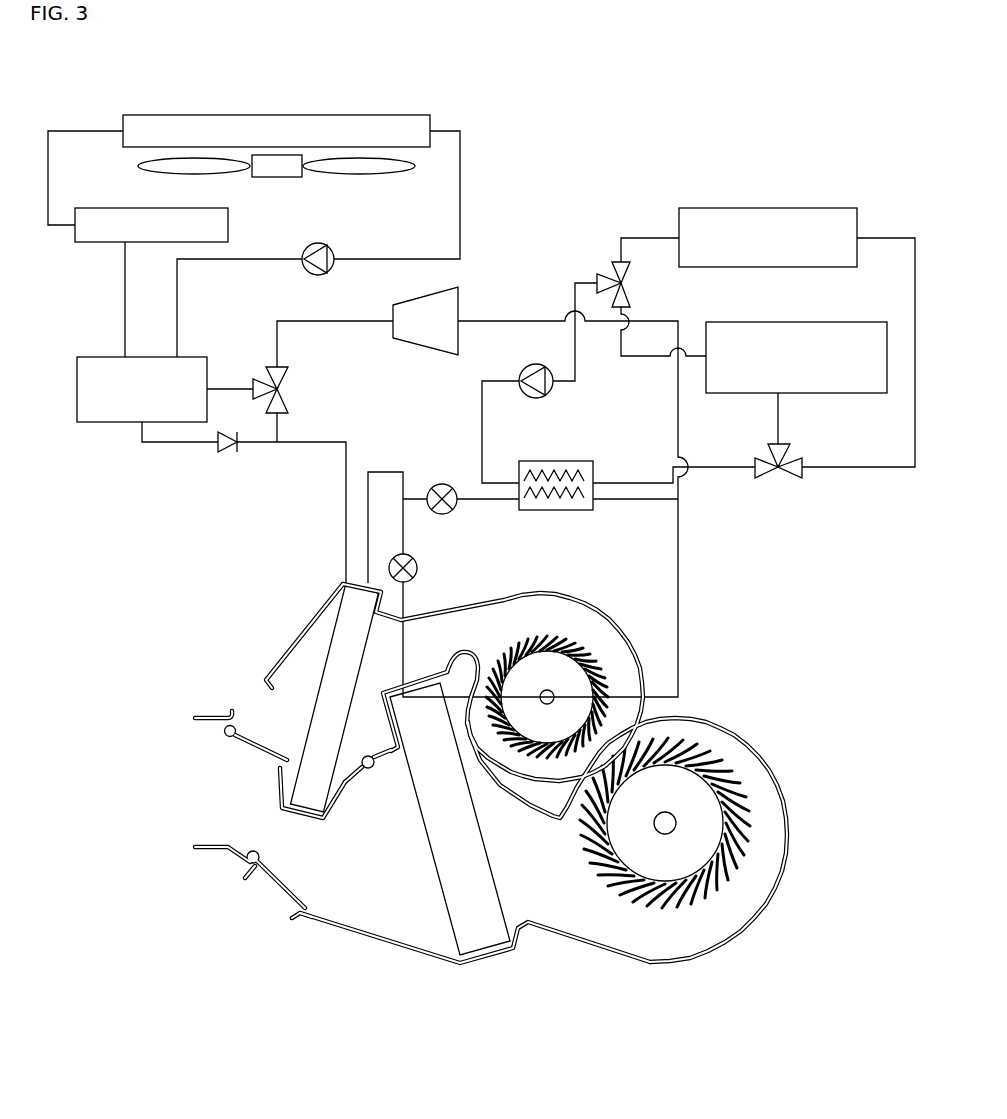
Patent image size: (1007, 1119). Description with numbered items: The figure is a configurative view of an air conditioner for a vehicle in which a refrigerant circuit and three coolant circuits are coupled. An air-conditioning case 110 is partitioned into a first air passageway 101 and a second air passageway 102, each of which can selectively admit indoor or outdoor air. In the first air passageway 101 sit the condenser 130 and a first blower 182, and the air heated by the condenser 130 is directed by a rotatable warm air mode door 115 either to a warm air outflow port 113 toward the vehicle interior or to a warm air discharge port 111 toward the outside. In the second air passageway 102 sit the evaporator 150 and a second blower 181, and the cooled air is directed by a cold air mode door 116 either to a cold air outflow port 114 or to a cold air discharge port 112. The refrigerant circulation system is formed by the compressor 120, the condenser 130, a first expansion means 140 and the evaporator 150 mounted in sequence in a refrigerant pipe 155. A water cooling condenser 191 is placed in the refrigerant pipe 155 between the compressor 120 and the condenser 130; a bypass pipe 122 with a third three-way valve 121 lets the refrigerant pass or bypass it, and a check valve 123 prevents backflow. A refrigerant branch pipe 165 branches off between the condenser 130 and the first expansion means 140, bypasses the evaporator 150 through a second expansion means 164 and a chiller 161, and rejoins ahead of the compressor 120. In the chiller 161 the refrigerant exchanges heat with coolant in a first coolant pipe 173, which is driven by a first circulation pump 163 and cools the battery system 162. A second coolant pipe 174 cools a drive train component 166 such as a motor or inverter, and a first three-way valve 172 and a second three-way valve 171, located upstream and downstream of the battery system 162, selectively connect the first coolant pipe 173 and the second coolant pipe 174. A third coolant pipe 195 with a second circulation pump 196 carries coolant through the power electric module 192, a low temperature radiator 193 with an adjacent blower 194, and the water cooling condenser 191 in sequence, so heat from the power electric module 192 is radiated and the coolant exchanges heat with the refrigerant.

The first air passageway 101 is at (315, 653).
The second air passageway 102 is at (432, 852).
The air-conditioning case 110 is at (308, 632).
The warm air discharge port 111 is at (250, 692).
The cold air discharge port 112 is at (270, 888).
The warm air outflow port 113 is at (250, 750).
The cold air outflow port 114 is at (262, 825).
The warm air mode door 115 is at (225, 733).
The cold air mode door 116 is at (290, 905).
The compressor 120 is at (425, 342).
The third three-way valve 121 is at (288, 382).
The bypass pipe 122 is at (280, 427).
The check valve 123 is at (230, 453).
The condenser 130 is at (327, 681).
The first expansion means 140 is at (418, 567).
The evaporator 150 is at (483, 927).
The refrigerant pipe 155 is at (680, 612).
The chiller 161 is at (555, 512).
The battery system 162 is at (767, 207).
The first circulation pump 163 is at (533, 398).
The second expansion means 164 is at (445, 515).
The refrigerant branch pipe 165 is at (637, 503).
The drive train component 166 is at (817, 322).
The second three-way valve 171 is at (613, 272).
The first three-way valve 172 is at (787, 477).
The first coolant pipe 173 is at (915, 257).
The second coolant pipe 174 is at (778, 420).
The second blower 181 is at (752, 827).
The first blower 182 is at (600, 660).
The water cooling condenser 191 is at (90, 357).
The power electric module 192 is at (89, 243).
The low temperature radiator 193 is at (277, 113).
The blower 194 is at (368, 173).
The third coolant pipe 195 is at (462, 195).
The second circulation pump 196 is at (305, 270).